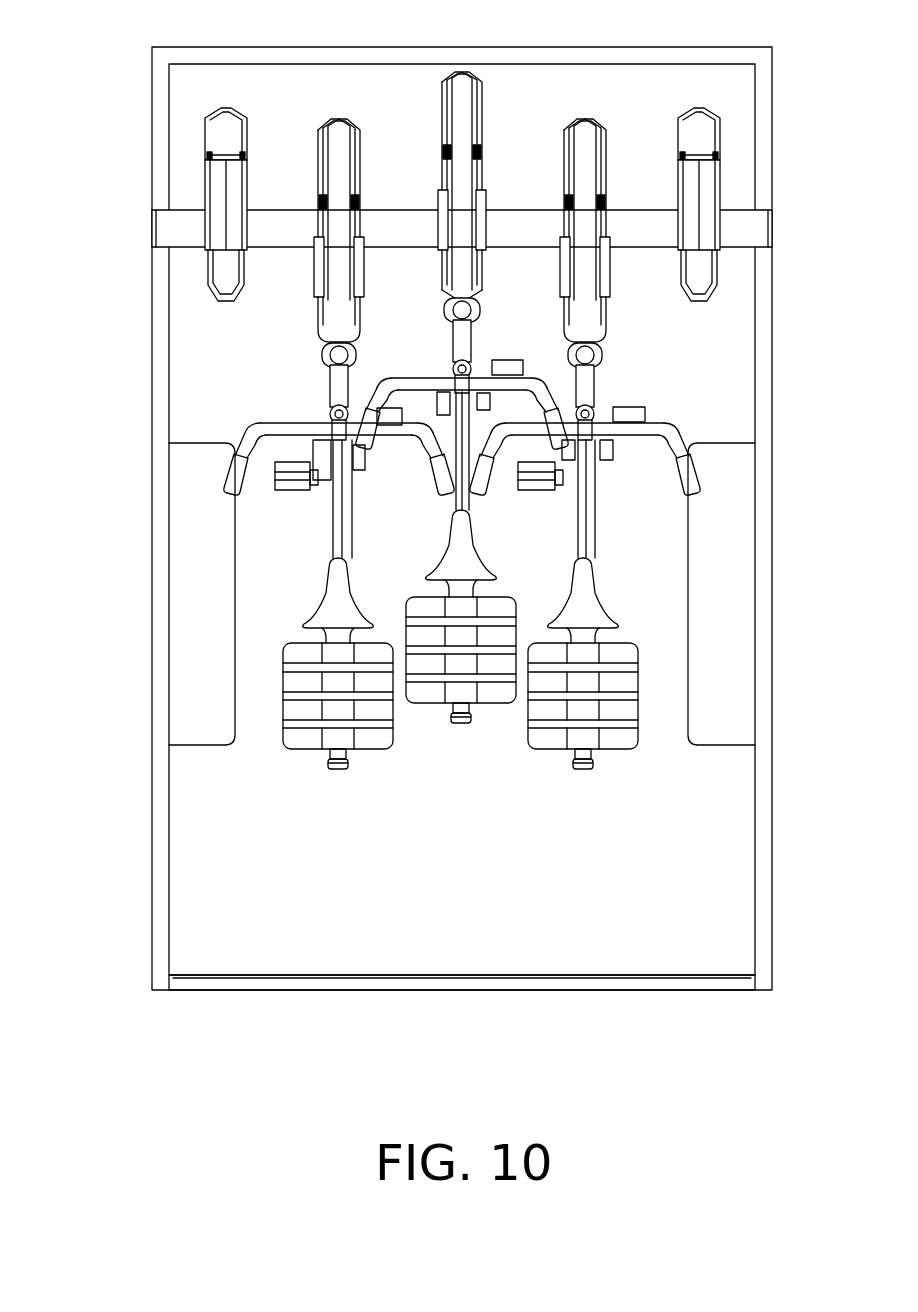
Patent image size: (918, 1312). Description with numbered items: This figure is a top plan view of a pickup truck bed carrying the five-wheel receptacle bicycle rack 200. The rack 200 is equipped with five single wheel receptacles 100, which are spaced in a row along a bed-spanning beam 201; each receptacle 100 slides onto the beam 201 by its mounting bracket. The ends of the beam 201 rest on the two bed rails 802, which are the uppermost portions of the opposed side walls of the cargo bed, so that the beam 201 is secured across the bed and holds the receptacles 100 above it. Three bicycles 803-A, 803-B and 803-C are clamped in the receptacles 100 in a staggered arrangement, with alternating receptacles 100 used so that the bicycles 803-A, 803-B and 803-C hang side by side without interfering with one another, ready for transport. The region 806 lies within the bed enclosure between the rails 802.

The single wheel receptacle 100 is at (787, 84).
The five-wheel receptacle bicycle rack 200 is at (415, 92).
The bed-spanning beam 201 is at (625, 230).
The bed rail 802 is at (149, 374).
The bicycle 803-A is at (313, 762).
The bicycle 803-B is at (433, 737).
The bicycle 803-C is at (558, 762).
The enclosure floor 806 is at (479, 883).